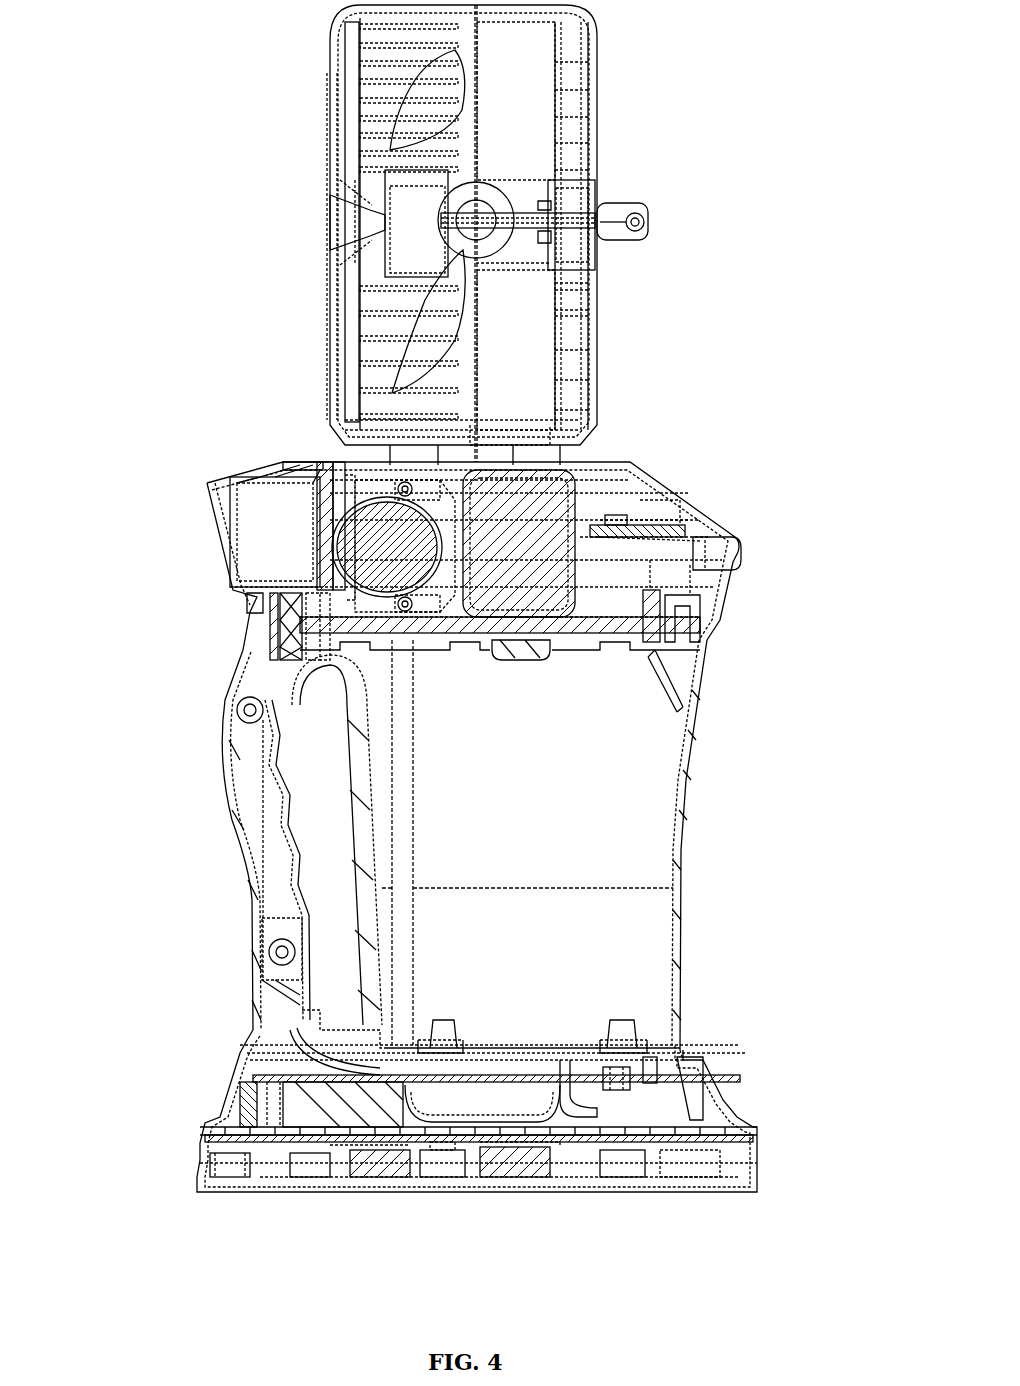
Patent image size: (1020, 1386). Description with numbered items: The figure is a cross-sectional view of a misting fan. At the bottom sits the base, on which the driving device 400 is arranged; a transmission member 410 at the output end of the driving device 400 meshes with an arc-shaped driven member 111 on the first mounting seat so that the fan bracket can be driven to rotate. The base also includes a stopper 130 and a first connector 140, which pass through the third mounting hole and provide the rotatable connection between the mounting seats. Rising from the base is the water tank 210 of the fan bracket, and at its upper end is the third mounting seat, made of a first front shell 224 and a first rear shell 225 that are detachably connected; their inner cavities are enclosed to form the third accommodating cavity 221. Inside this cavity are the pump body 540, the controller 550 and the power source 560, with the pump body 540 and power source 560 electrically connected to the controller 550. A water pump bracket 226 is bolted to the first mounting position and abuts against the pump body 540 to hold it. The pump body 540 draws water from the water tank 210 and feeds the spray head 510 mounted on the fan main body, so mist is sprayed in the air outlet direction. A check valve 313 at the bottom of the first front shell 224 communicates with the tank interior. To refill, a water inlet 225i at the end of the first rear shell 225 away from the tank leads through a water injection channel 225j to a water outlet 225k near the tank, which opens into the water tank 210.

The first rear shell 225 is at (390, 57).
The spray head 510 is at (650, 215).
The first front shell 224 is at (540, 345).
The water pump bracket 226 is at (470, 515).
The water inlet 225i is at (290, 473).
The power source 560 is at (580, 520).
The pump body 540 is at (375, 525).
The water injection channel 225j is at (265, 547).
The controller 550 is at (620, 535).
The third accommodating cavity 221 is at (615, 585).
The check valve 313 is at (652, 617).
The water outlet 225k is at (337, 667).
The water tank 210 is at (677, 815).
The driving device 400 is at (300, 1058).
The arc-shaped driven member 111 is at (337, 1170).
The transmission member 410 is at (393, 1175).
The first connector 140 is at (472, 1178).
The stopper 130 is at (515, 1175).